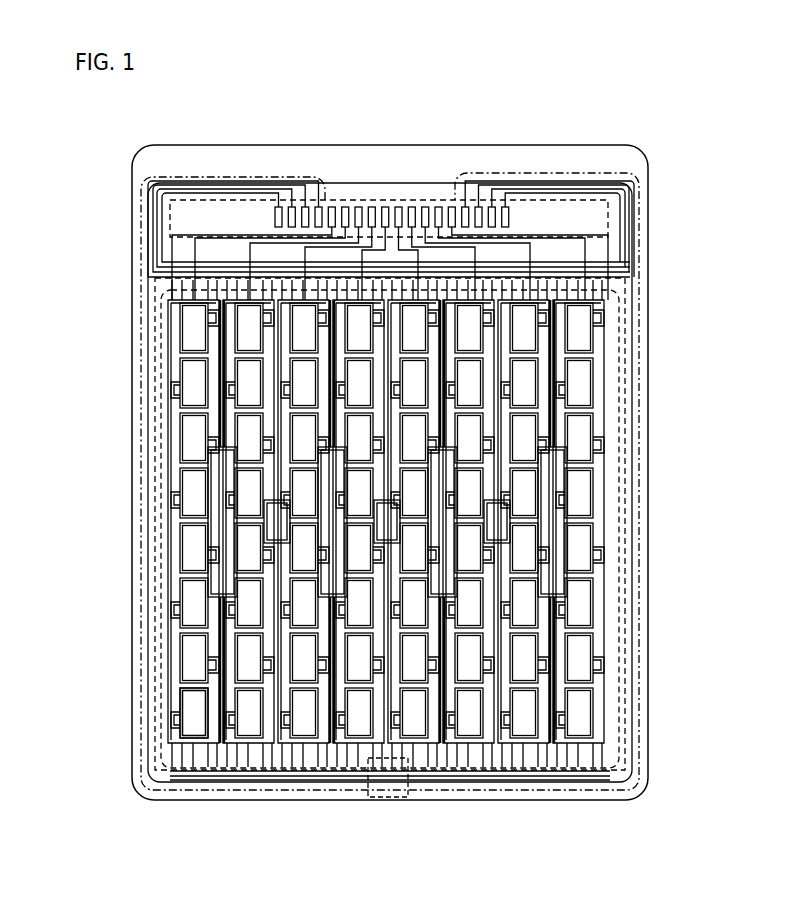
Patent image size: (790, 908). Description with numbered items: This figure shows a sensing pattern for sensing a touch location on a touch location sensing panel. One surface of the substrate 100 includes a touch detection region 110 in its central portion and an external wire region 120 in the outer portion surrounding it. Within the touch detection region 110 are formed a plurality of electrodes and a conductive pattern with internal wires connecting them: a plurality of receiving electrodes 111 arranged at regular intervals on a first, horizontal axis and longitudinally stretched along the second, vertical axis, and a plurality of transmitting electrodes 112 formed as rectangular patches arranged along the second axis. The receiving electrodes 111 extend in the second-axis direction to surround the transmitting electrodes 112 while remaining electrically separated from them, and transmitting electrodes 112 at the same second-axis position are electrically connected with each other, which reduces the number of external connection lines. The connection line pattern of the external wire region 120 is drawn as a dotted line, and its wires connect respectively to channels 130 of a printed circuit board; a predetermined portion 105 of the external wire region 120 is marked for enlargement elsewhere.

The substrate 100 is at (387, 143).
The predetermined portion 105 is at (388, 798).
The touch detection region 110 is at (336, 782).
The receiving electrodes 111 is at (193, 782).
The transmitting electrodes 112 is at (186, 713).
The external wire region 120 is at (544, 795).
The channels 130 is at (385, 205).